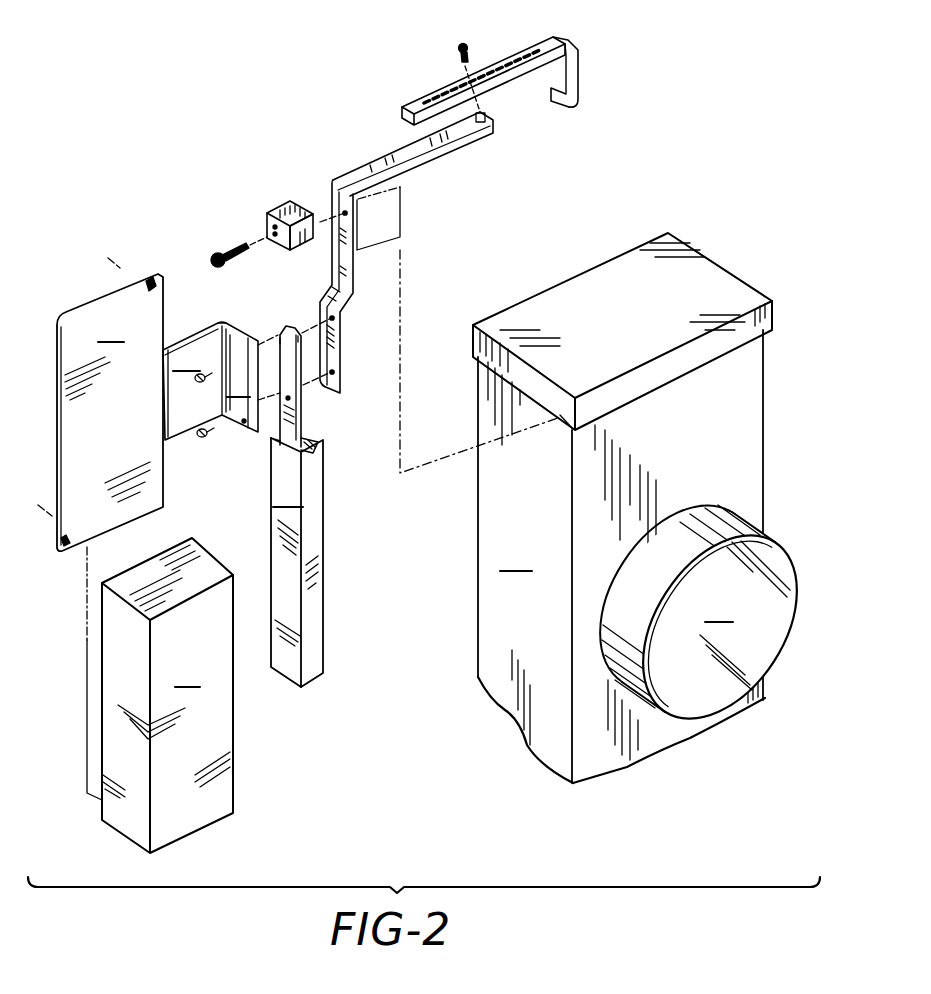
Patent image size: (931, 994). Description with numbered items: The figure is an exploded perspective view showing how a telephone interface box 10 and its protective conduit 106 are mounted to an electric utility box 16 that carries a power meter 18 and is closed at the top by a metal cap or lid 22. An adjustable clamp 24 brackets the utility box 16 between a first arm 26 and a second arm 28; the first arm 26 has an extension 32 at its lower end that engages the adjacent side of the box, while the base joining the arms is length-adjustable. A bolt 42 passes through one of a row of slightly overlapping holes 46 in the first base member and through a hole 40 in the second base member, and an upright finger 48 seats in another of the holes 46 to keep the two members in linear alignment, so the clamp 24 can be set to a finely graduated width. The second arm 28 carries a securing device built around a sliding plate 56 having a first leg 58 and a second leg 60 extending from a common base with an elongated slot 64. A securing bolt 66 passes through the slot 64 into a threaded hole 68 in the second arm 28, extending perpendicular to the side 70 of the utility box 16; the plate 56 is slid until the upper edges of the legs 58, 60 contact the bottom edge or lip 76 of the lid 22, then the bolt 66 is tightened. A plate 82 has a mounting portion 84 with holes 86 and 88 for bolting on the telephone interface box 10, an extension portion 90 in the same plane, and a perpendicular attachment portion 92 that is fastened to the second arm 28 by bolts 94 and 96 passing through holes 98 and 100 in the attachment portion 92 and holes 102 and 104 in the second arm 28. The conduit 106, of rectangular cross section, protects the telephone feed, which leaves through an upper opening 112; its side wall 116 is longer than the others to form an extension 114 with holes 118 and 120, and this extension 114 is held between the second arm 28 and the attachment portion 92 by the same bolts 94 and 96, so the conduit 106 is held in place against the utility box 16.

The telephone interface box 10 is at (167, 695).
The electric utility box 16 is at (651, 508).
The power meter 18 is at (698, 611).
The metal cap or lip (lid) 22 is at (773, 300).
The adjustable clamp 24 is at (514, 84).
The first arm 26 is at (606, 62).
The second arm 28 is at (418, 252).
The extension 32 is at (562, 107).
The hole 40 is at (470, 132).
The bolt 42 is at (470, 48).
The holes 46 is at (421, 101).
The upright finger 48 is at (486, 117).
The sliding plate 56 is at (247, 176).
The first leg 58 is at (286, 207).
The second leg 60 is at (311, 213).
The elongated slot 64 is at (272, 229).
The securing bolt 66 is at (216, 254).
The threaded hole 68 is at (340, 212).
The side of utility box 70 is at (621, 556).
The bottom edge or lip of lid 76 is at (557, 429).
The plate 82 is at (88, 412).
The mounting portion 84 is at (110, 412).
The hole 86 is at (149, 279).
The hole 88 is at (77, 541).
The extension portion 90 is at (193, 390).
The attachment portion 92 is at (243, 372).
The bolt 94 is at (194, 379).
The bolt 96 is at (200, 439).
The hole 98 is at (247, 330).
The hole 100 is at (248, 426).
The hole 102 is at (337, 317).
The hole 104 is at (337, 371).
The conduit 106 is at (317, 475).
The upper opening 112 is at (319, 441).
The extension 114 is at (278, 339).
The side wall 116 is at (297, 562).
The hole 118 is at (297, 334).
The hole 120 is at (294, 399).